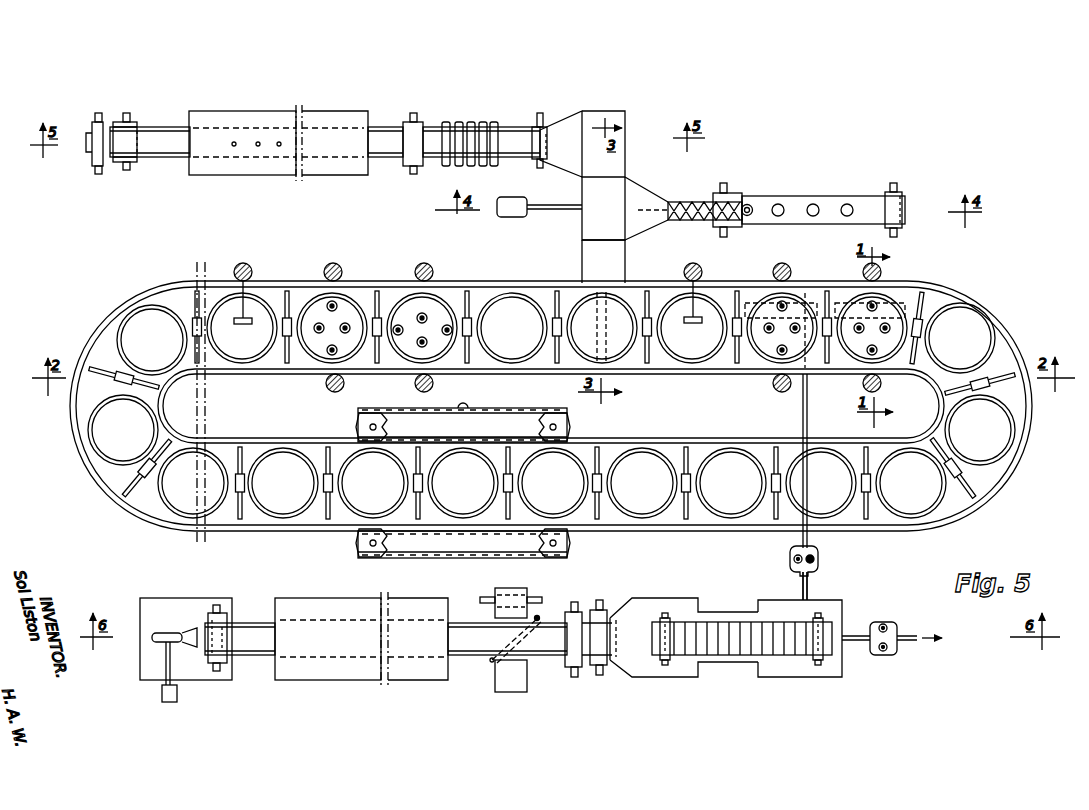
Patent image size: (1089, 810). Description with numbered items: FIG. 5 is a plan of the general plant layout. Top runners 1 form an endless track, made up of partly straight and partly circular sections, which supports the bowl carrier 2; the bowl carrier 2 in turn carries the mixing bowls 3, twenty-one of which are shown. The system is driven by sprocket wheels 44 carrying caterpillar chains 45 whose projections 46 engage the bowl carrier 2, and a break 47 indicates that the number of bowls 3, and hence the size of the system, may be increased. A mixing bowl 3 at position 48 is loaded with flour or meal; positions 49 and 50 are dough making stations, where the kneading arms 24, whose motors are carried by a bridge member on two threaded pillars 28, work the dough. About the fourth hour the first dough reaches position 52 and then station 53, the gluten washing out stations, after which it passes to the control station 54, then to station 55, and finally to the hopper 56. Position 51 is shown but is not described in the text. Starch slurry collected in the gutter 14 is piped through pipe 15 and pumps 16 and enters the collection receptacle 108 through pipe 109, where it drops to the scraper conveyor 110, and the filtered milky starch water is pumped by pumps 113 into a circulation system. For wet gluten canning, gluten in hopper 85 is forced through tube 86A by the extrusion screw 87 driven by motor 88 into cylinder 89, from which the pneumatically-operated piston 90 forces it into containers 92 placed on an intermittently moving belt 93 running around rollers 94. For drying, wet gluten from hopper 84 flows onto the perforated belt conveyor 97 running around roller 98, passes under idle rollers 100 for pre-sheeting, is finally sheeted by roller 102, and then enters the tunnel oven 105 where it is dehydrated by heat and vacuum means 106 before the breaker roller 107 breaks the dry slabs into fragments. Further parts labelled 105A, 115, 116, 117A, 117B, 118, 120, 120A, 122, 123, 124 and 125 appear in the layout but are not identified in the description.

The top runners 1 is at (545, 286).
The bowl carrier 2 is at (103, 328).
The mixing bowls 3 is at (250, 512).
The gutter 14 is at (905, 300).
The pipe 15 is at (802, 421).
The pump 16 is at (458, 430).
The kneading arms 24 is at (330, 350).
The threaded pillars 28 is at (434, 277).
The sprocket wheels 44 is at (563, 430).
The caterpillar chains 45 is at (507, 412).
The projections 46 is at (467, 557).
The break 47 is at (201, 394).
The loading position 48 is at (502, 366).
The dough making station 49 is at (393, 366).
The dough making station 50 is at (593, 343).
The carrier 51 is at (246, 366).
The gluten washing out station 52 is at (853, 352).
The gluten washing out station 53 is at (773, 358).
The control station 54 is at (696, 366).
The station 55 is at (618, 360).
The hopper 56 is at (620, 274).
The hopper 84 is at (620, 170).
The hopper 85 is at (592, 221).
The tube 86A is at (681, 200).
The extrusion screw 87 is at (688, 221).
The motor 88 is at (513, 218).
The cylinder 89 is at (746, 222).
The pneumatically-operated piston 90 is at (748, 204).
The containers 92 is at (782, 218).
The belt 93 is at (900, 190).
The rollers 94 is at (832, 202).
The belt conveyor 97 is at (518, 162).
The roller 98 is at (132, 166).
The idle rollers 100 is at (463, 167).
The roller 102 is at (410, 168).
The tunnel oven 105 is at (326, 176).
The break line 105A is at (297, 182).
The heat and vacuum means 106 is at (258, 146).
The breaker roller 107 is at (100, 168).
The collection receptacle 108 is at (840, 616).
The pipe 109 is at (807, 596).
The scraper conveyor 110 is at (752, 628).
The pumps 113 is at (887, 653).
The housing 115 is at (657, 600).
The solenoid 116 is at (546, 618).
The bearing bracket 117A is at (598, 676).
The bearing bracket 117B is at (228, 680).
The collar 118 is at (568, 672).
The cylinder 120 is at (300, 608).
The cylinder break 120A is at (388, 597).
The lever 122 is at (163, 625).
The box 123 is at (140, 660).
The block 124 is at (520, 682).
The link 125 is at (490, 664).